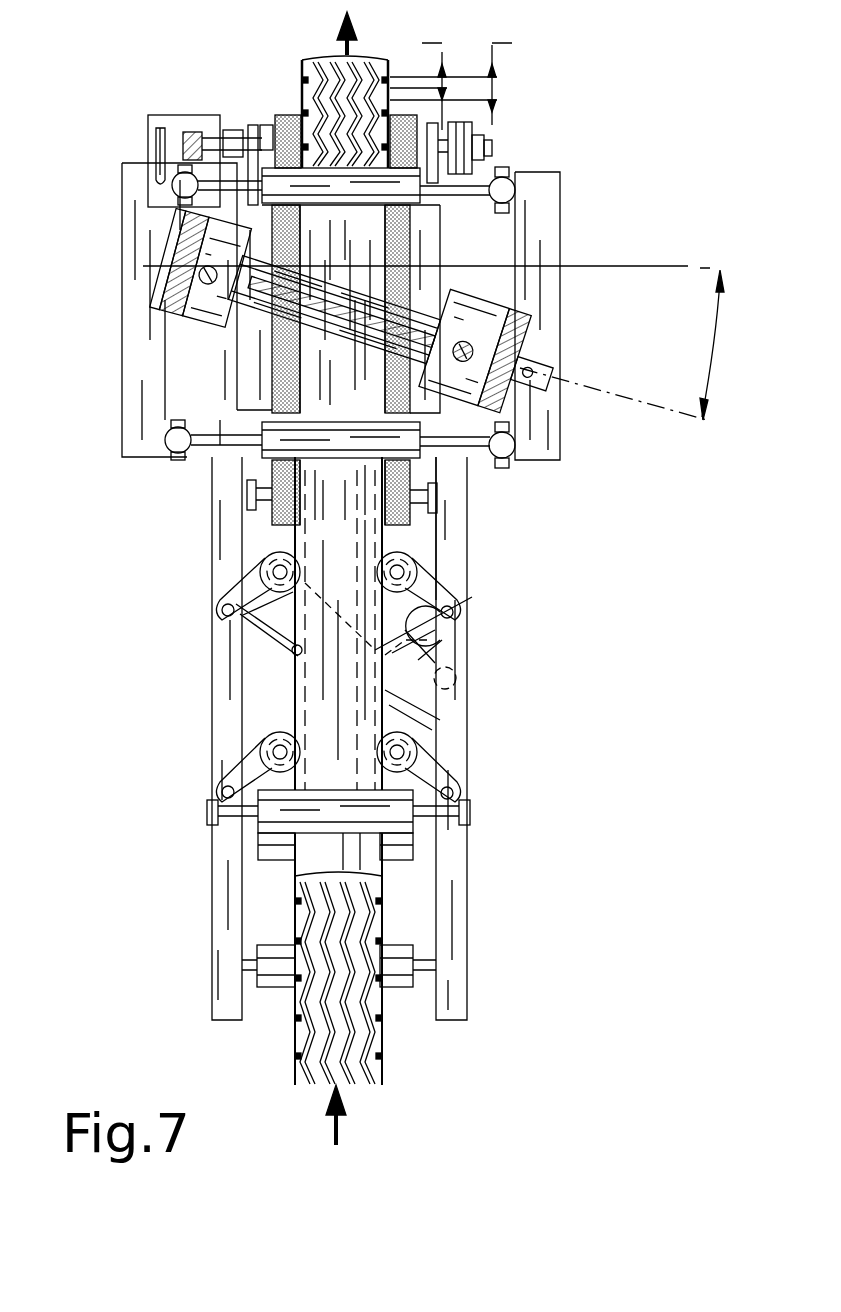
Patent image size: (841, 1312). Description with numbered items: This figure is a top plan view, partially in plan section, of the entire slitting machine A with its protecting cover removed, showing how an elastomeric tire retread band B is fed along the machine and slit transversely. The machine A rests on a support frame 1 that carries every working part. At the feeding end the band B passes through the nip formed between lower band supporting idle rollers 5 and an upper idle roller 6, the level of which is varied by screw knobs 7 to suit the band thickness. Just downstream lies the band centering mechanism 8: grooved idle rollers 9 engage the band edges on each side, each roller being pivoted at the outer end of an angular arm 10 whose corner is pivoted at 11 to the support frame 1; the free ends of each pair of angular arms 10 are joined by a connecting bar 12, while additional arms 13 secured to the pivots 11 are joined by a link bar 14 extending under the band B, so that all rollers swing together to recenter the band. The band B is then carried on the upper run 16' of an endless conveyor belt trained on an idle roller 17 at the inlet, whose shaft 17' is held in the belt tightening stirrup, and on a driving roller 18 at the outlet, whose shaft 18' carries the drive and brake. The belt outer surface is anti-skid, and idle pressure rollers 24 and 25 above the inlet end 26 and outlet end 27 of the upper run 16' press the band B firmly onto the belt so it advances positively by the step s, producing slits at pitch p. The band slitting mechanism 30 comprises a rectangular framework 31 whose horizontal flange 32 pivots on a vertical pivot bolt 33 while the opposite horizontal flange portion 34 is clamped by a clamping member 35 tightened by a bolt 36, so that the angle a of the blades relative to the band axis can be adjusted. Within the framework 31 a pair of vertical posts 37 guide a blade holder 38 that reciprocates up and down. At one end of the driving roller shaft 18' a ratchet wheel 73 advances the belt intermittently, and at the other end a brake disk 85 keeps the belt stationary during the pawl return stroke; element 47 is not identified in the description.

The support frame 1 is at (130, 363).
The lower band supporting idle rollers 5 is at (403, 860).
The upper idle roller 6 is at (253, 833).
The screw knobs 7 is at (403, 800).
The band centering mechanism 8 is at (453, 587).
The grooved idle rollers 9 is at (262, 557).
The angular arm 10 is at (420, 627).
The pivot 11 is at (417, 610).
The connecting bar 12 is at (390, 700).
The additional arm 13 is at (457, 655).
The link bar 14 is at (420, 653).
The upper run of the conveyor belt 16' is at (239, 365).
The idle roller 17 is at (210, 511).
The shaft of idle roller 17' is at (464, 508).
The driving roller 18 is at (253, 126).
The shaft of the driving roller 18' is at (326, 106).
The idle pressure roller 24 is at (240, 447).
The idle pressure roller 25 is at (197, 205).
The inlet end of the conveyor upper run 26 is at (477, 487).
The outlet end of the conveyor upper run 27 is at (285, 115).
The band slitting mechanism 30 is at (540, 313).
The rectangular framework 31 is at (530, 340).
The horizontal flange 32 is at (160, 288).
The vertical pivot bolt 33 is at (170, 257).
The horizontal flange portion 34 is at (567, 420).
The clamping member 35 is at (543, 367).
The bolt 36 is at (527, 375).
The vertical posts 37 is at (497, 310).
The blade holder 38 is at (465, 340).
The screw block 47 is at (237, 307).
The ratchet wheel 73 is at (170, 135).
The brake disk 85 is at (488, 127).
The machine A is at (180, 653).
The tire retread band B is at (300, 1070).
The angle a is at (712, 345).
The pitch p is at (407, 100).
The step s is at (527, 45).